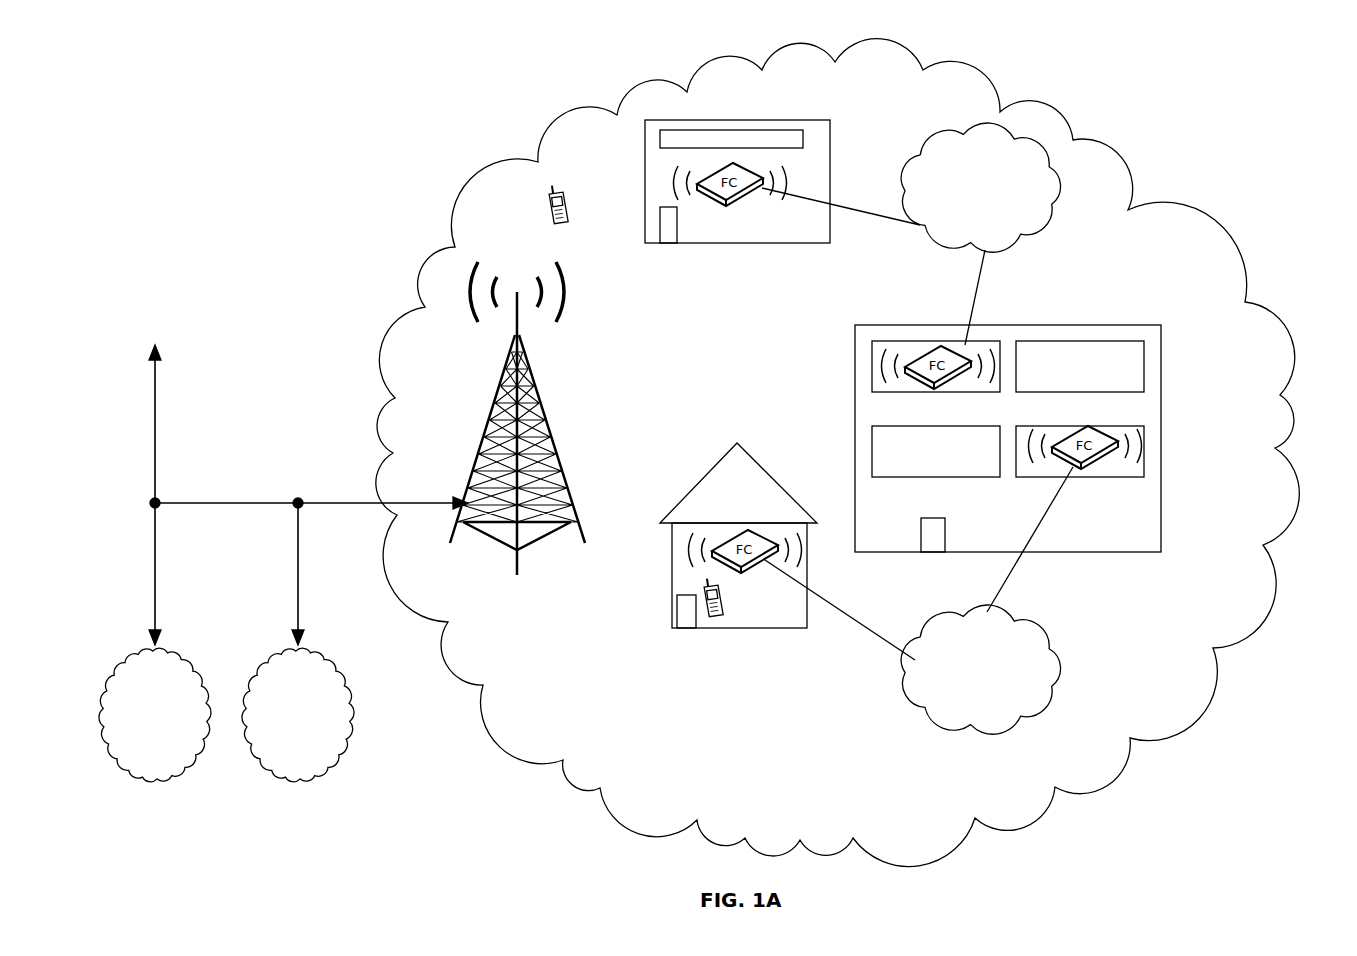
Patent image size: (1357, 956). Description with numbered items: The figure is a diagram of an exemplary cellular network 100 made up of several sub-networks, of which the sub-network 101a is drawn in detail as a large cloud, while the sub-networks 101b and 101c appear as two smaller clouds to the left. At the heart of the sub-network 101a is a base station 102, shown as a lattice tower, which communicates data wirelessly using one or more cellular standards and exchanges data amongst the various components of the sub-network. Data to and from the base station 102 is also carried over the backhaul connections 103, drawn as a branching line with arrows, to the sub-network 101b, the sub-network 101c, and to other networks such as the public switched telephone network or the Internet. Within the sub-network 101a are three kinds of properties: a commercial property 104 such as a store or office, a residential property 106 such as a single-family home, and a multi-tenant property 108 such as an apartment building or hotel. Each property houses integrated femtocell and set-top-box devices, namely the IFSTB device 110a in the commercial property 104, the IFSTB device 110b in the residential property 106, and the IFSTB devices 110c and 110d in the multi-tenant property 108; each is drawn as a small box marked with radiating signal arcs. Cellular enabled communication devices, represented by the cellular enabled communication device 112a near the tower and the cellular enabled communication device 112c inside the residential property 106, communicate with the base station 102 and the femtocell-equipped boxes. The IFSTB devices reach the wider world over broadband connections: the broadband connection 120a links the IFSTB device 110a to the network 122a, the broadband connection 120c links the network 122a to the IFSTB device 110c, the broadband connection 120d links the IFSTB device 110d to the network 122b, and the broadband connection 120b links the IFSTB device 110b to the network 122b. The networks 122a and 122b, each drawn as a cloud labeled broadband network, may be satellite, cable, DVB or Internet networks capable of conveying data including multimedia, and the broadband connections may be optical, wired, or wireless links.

The cellular network 100 is at (128, 78).
The sub-network 101a is at (569, 97).
The sub-network 101b is at (155, 782).
The sub-network 101c is at (298, 782).
The base station 102 is at (540, 392).
The backhaul connections 103 is at (230, 502).
The commercial property 104 is at (678, 120).
The residential property 106 is at (705, 474).
The multi-tenant property 108 is at (1162, 358).
The integrated femtocell and set-top-box (IFSTB) device 110a is at (740, 196).
The integrated femtocell and set-top-box (IFSTB) device 110b is at (748, 573).
The integrated femtocell and set-top-box (IFSTB) device 110c is at (945, 380).
The integrated femtocell and set-top-box (IFSTB) device 110d is at (1093, 462).
The cellular enabled communication device 112a is at (566, 190).
The cellular enabled communication device 112c is at (722, 622).
The broadband connection 120a is at (877, 210).
The broadband connection 120b is at (853, 622).
The broadband connection 120c is at (974, 290).
The broadband connection 120d is at (1016, 570).
The network 122a is at (1046, 228).
The network 122b is at (1049, 708).